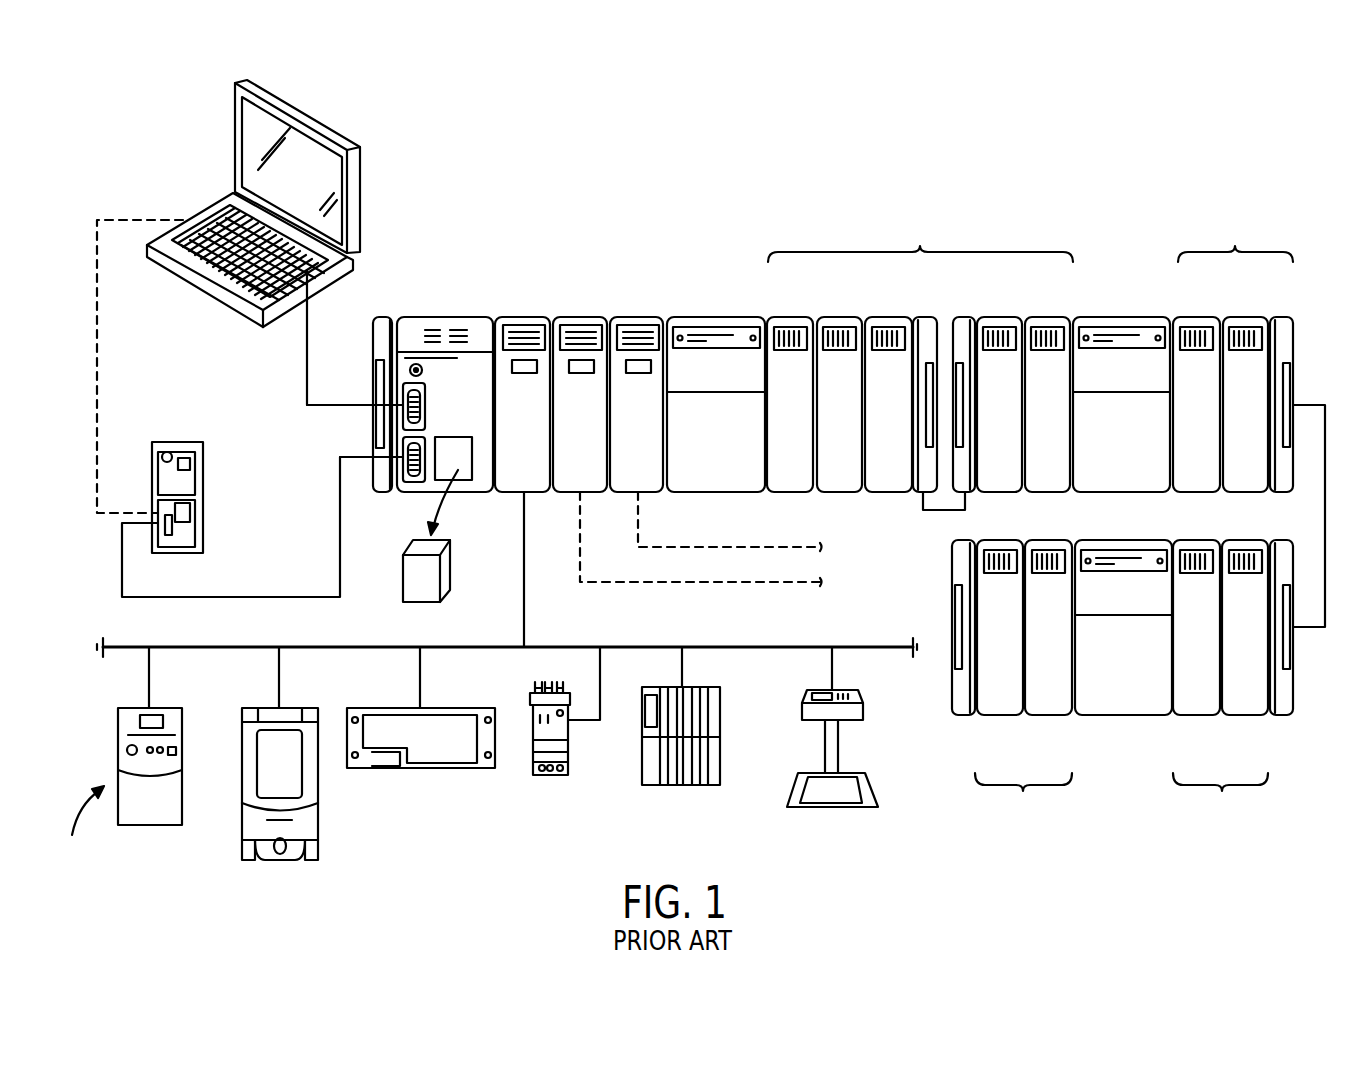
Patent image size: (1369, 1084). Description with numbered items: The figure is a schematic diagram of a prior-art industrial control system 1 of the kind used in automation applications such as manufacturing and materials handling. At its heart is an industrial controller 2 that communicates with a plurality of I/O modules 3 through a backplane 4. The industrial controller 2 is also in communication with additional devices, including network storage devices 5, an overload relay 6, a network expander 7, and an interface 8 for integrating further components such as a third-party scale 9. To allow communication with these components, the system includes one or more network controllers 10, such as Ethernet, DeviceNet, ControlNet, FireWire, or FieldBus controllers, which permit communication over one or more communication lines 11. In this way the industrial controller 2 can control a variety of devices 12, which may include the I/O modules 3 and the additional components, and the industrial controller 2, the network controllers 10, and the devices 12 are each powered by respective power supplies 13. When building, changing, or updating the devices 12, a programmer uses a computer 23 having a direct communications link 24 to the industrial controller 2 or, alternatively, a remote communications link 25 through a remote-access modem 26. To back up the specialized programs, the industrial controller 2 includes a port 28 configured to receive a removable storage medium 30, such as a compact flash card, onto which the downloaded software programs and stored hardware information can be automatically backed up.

The industrial control system 1 is at (1158, 216).
The industrial controller 2 is at (447, 318).
The I/O modules 3 is at (790, 318).
The backplane 4 is at (383, 318).
The network storage devices 5 is at (150, 825).
The overload relay 6 is at (550, 775).
The network expander 7 is at (682, 785).
The interface 8 is at (863, 702).
The third-party scale 9 is at (832, 807).
The network controllers 10 is at (524, 318).
The communication lines 11 is at (710, 548).
The devices 12 is at (669, 541).
The power supplies 13 is at (722, 318).
The computer 23 is at (305, 110).
The direct communications link 24 is at (352, 403).
The remote communications link 25 is at (107, 366).
The remote-access modem 26 is at (203, 475).
The port 28 is at (478, 475).
The removable storage medium 30 is at (420, 602).